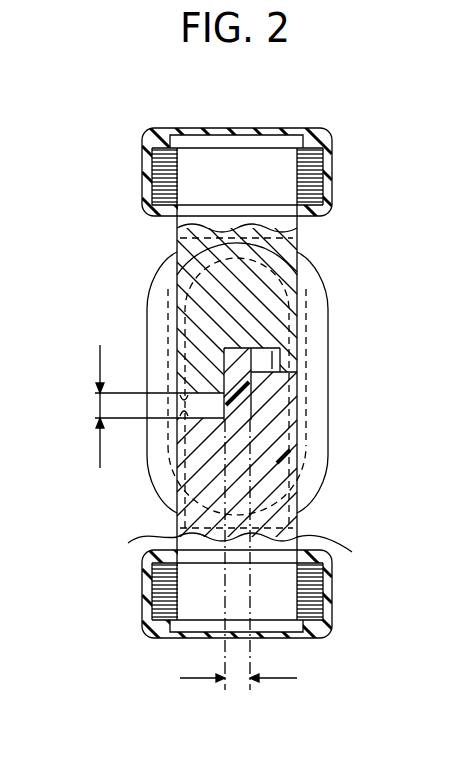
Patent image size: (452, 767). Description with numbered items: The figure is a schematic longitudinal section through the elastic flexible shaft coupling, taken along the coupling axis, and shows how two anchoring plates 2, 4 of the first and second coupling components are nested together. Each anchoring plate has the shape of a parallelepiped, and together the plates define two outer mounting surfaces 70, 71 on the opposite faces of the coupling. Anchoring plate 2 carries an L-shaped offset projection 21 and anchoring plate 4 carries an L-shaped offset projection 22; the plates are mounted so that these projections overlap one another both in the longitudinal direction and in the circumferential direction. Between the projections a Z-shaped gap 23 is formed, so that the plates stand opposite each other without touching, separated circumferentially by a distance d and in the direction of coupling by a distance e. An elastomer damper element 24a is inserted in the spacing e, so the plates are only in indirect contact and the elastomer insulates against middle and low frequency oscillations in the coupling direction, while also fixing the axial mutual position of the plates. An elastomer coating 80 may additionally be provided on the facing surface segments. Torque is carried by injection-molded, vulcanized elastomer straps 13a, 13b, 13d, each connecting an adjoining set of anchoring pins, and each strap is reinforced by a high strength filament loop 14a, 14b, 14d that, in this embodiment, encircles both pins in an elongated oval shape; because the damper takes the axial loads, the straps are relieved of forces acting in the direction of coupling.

The anchoring plate 2 is at (274, 499).
The anchoring plate 4 is at (299, 254).
The elastomer strap 13a is at (327, 440).
The elastomer strap 13b is at (305, 638).
The elastomer strap 13d is at (250, 128).
The filament loop 14a is at (331, 303).
The filament loop 14b is at (165, 600).
The filament loop 14d is at (322, 167).
The L-shaped projection 21 is at (280, 388).
The L-shaped projection 22 is at (188, 365).
The Z-shaped gap 23 is at (281, 351).
The elastomer damper element 24a is at (172, 302).
The outer mounting surface 70 is at (303, 539).
The outer mounting surface 71 is at (160, 540).
The elastomer coating 80 is at (281, 356).
The circumferential distance d is at (100, 404).
The coupling-direction spacing e is at (238, 683).